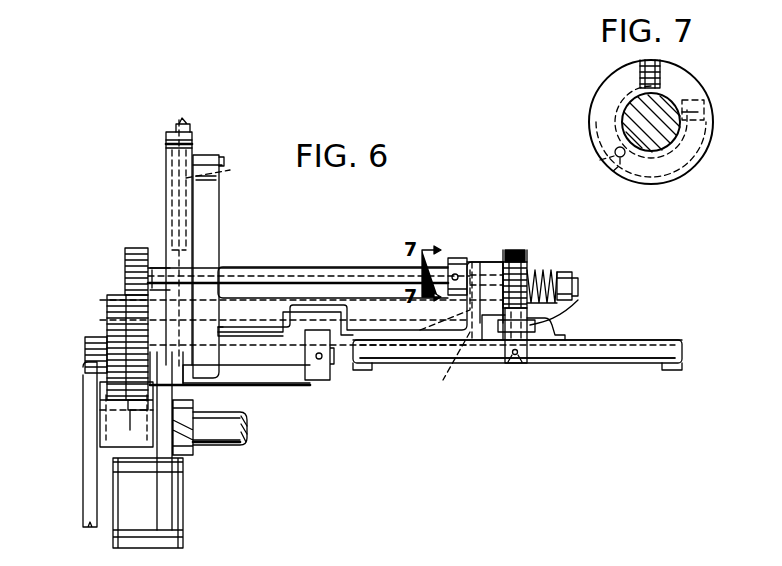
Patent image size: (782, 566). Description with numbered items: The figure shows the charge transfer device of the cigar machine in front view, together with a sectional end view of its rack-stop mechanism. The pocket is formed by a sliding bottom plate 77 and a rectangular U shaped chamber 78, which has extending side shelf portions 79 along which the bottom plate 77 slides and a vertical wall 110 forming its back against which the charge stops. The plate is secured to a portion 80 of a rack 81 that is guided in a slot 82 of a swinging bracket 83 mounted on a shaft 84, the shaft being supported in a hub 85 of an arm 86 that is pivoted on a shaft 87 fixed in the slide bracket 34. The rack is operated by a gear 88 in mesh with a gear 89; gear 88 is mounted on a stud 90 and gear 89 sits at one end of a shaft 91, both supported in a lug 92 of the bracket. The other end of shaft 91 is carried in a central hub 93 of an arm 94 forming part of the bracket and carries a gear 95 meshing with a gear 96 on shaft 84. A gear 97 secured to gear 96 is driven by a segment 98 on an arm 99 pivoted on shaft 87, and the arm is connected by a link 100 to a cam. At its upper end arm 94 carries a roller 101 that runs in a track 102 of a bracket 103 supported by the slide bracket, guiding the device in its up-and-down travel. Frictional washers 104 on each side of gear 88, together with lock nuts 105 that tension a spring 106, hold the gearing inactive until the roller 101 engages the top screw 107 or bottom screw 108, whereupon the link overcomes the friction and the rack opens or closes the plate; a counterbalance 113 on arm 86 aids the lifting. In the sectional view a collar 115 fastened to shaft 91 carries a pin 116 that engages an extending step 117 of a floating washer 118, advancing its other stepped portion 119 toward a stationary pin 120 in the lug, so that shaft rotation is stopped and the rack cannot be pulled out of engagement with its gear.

In FIG. 6, the slide bracket 34 is at (401, 2).
In FIG. 6, the sliding bottom plate 77 is at (480, 364).
In FIG. 6, the rectangular U shaped chamber 78 is at (632, 342).
In FIG. 6, the side shelf portions 79 is at (366, 371).
In FIG. 6, the portion of rack 80 is at (530, 356).
In FIG. 6, the rack 81 is at (560, 312).
In FIG. 6, the slot 82 is at (535, 318).
In FIG. 6, the swinging bracket 83 is at (338, 300).
In FIG. 6, the shaft 84 is at (268, 375).
In FIG. 6, the hub 85 is at (178, 386).
In FIG. 6, the arm 86 is at (175, 438).
In FIG. 6, the shaft 87 is at (240, 446).
In FIG. 6, the gear 88 is at (508, 262).
In FIG. 6, the gear 89 is at (517, 250).
In FIG. 6, the stud 90 is at (578, 284).
In FIG. 6, the shaft 91 is at (298, 268).
In FIG. 7, the shaft 91 is at (640, 112).
In FIG. 6, the lug 92 is at (482, 262).
In FIG. 6, the central hub 93 is at (172, 265).
In FIG. 6, the arm 94 is at (220, 215).
In FIG. 6, the gear 95 is at (124, 258).
In FIG. 6, the gear 96 is at (132, 408).
In FIG. 6, the gear 97 is at (90, 355).
In FIG. 6, the segment 98 is at (106, 302).
In FIG. 6, the arm 99 is at (102, 415).
In FIG. 6, the link 100 is at (83, 497).
In FIG. 6, the roller 101 is at (175, 192).
In FIG. 6, the track 102 is at (225, 180).
In FIG. 6, the bracket 103 is at (167, 160).
In FIG. 6, the frictional washers 104 is at (500, 250).
In FIG. 6, the lock nuts 105 is at (575, 278).
In FIG. 6, the spring 106 is at (540, 272).
In FIG. 6, the top screw 107 is at (184, 120).
In FIG. 6, the bottom screw 108 is at (235, 318).
In FIG. 6, the vertical wall 110 is at (606, 350).
In FIG. 6, the counterbalance 113 is at (180, 520).
In FIG. 6, the collar 115 is at (452, 258).
In FIG. 7, the collar 115 is at (700, 78).
In FIG. 7, the pin 116 is at (614, 150).
In FIG. 7, the extending step 117 is at (705, 103).
In FIG. 6, the floating washer 118 is at (470, 300).
In FIG. 7, the floating washer 118 is at (665, 88).
In FIG. 7, the stepped portion 119 is at (600, 158).
In FIG. 6, the stationary pin 120 is at (443, 380).
In FIG. 7, the stationary pin 120 is at (708, 106).